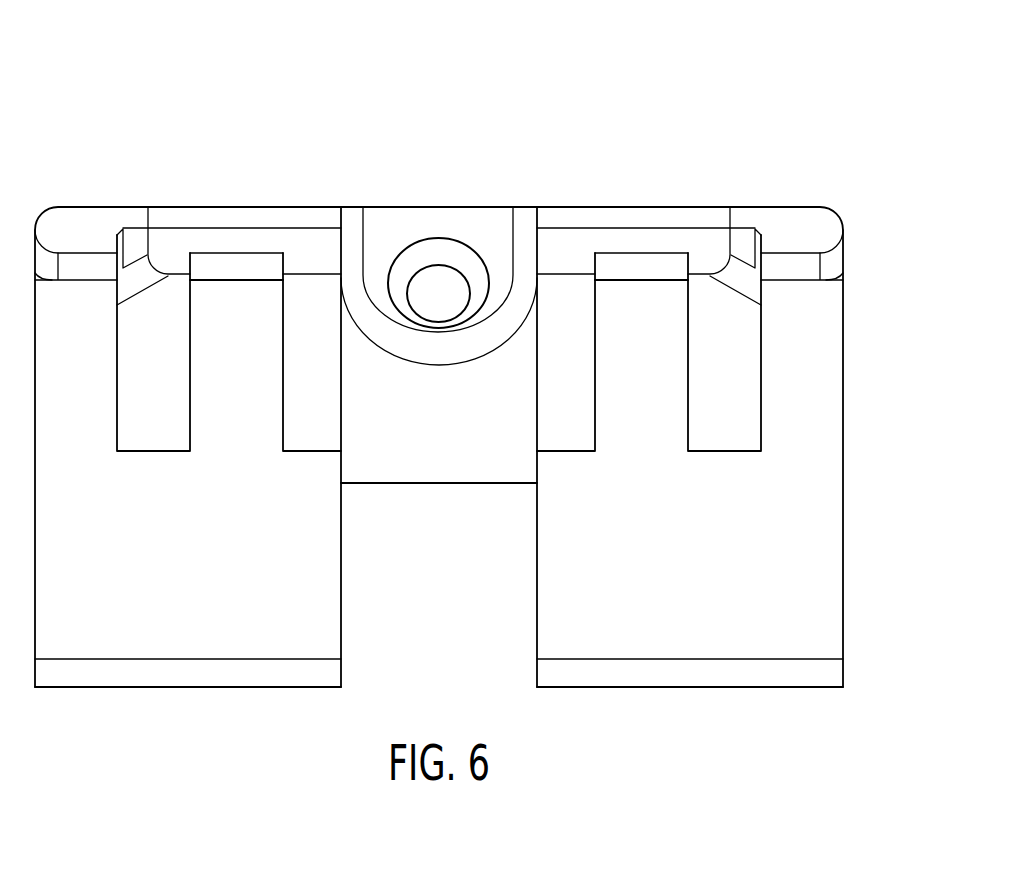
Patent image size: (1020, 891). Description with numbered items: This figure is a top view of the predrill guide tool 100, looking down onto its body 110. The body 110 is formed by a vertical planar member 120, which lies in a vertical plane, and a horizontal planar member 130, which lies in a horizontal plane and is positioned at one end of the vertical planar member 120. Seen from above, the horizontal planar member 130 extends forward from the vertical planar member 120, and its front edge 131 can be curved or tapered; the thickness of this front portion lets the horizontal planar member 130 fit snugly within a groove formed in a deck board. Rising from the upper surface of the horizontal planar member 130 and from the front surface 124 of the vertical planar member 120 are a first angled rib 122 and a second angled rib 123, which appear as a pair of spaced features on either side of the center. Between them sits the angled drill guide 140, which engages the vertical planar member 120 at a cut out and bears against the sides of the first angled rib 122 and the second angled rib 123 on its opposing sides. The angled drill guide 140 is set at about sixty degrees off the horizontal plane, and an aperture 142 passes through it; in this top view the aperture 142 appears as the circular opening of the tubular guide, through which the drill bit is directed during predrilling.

The predrill guide tool 100 is at (636, 80).
The body 110 is at (807, 490).
The vertical planar member 120 is at (133, 222).
The first angled rib 122 is at (160, 336).
The second angled rib 123 is at (727, 298).
The front surface 124 is at (253, 290).
The horizontal planar member 130 is at (807, 592).
The front edge 131 is at (698, 688).
The angled drill guide 140 is at (368, 355).
The aperture 142 is at (443, 297).